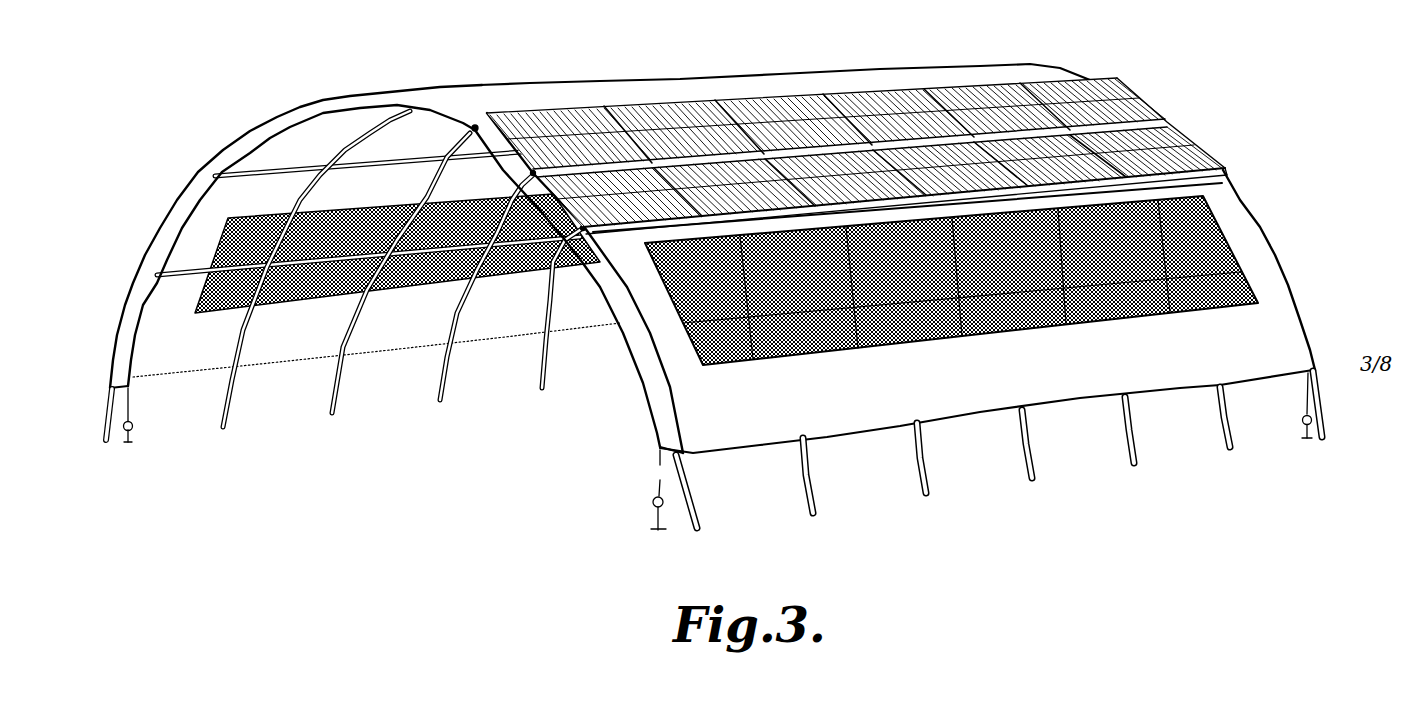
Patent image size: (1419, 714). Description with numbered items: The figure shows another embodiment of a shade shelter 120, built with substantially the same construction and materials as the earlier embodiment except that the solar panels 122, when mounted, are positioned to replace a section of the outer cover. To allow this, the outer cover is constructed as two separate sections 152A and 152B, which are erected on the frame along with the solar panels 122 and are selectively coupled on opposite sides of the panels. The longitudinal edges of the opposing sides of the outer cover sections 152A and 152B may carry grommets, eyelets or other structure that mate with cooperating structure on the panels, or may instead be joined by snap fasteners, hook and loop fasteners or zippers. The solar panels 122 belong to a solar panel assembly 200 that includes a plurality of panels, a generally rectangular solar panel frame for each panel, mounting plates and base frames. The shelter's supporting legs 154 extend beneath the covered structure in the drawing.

The outer cover section 152A is at (203, 163).
The outer cover section 152B is at (1287, 303).
The support legs 154 is at (697, 525).
The solar panel assembly 200 is at (857, 126).
The solar panels 122 is at (565, 117).
The shade shelter 120 is at (1172, 105).